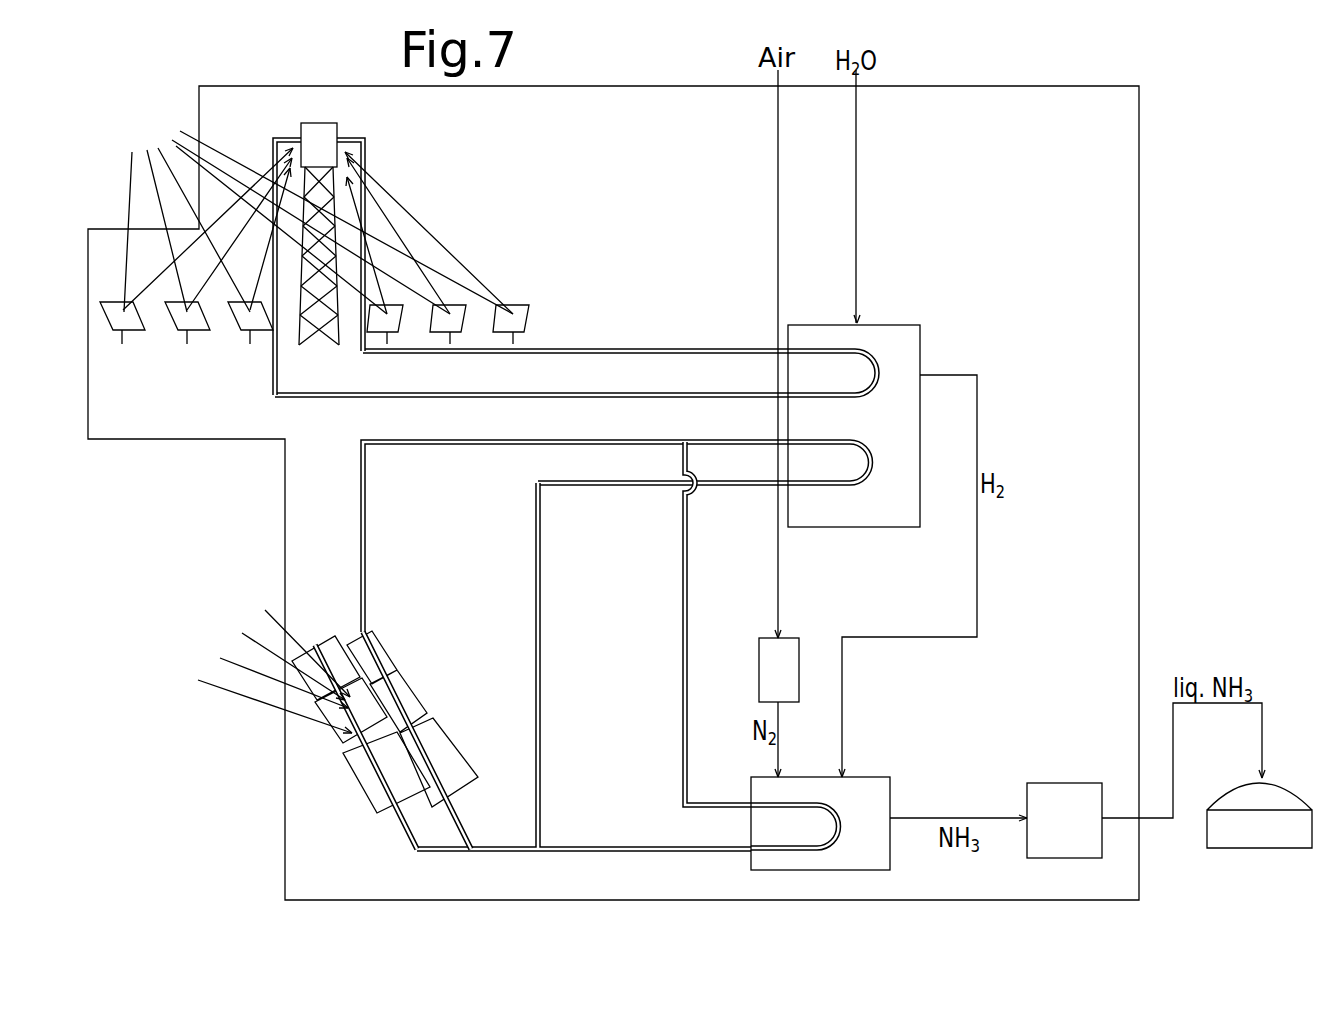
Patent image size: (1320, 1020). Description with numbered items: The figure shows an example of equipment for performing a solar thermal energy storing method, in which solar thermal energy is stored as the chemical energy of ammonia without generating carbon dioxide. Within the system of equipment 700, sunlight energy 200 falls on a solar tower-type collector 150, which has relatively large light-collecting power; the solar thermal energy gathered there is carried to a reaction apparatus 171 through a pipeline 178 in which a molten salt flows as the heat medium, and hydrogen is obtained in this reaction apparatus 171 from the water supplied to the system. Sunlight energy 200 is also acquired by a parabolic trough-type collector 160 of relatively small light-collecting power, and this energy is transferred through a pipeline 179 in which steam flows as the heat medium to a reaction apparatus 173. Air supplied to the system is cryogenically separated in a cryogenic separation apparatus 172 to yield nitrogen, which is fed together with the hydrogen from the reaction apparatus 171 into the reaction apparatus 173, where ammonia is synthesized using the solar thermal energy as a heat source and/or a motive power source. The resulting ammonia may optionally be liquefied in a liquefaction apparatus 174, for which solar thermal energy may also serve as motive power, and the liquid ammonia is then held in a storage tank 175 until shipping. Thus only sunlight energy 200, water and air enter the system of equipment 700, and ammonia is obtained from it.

The solar tower-type collector 150 is at (460, 173).
The parabolic trough-type collector 160 is at (407, 614).
The reaction apparatus 171 is at (926, 352).
The cryogenic separation apparatus 172 is at (800, 651).
The reaction apparatus 173 is at (893, 786).
The liquefaction apparatus 174 is at (1065, 783).
The storage tank 175 is at (1270, 780).
The pipeline 178 is at (681, 348).
The pipeline 179 is at (580, 847).
The sunlight energy 200 is at (127, 167).
The system of equipment 700 is at (1140, 353).